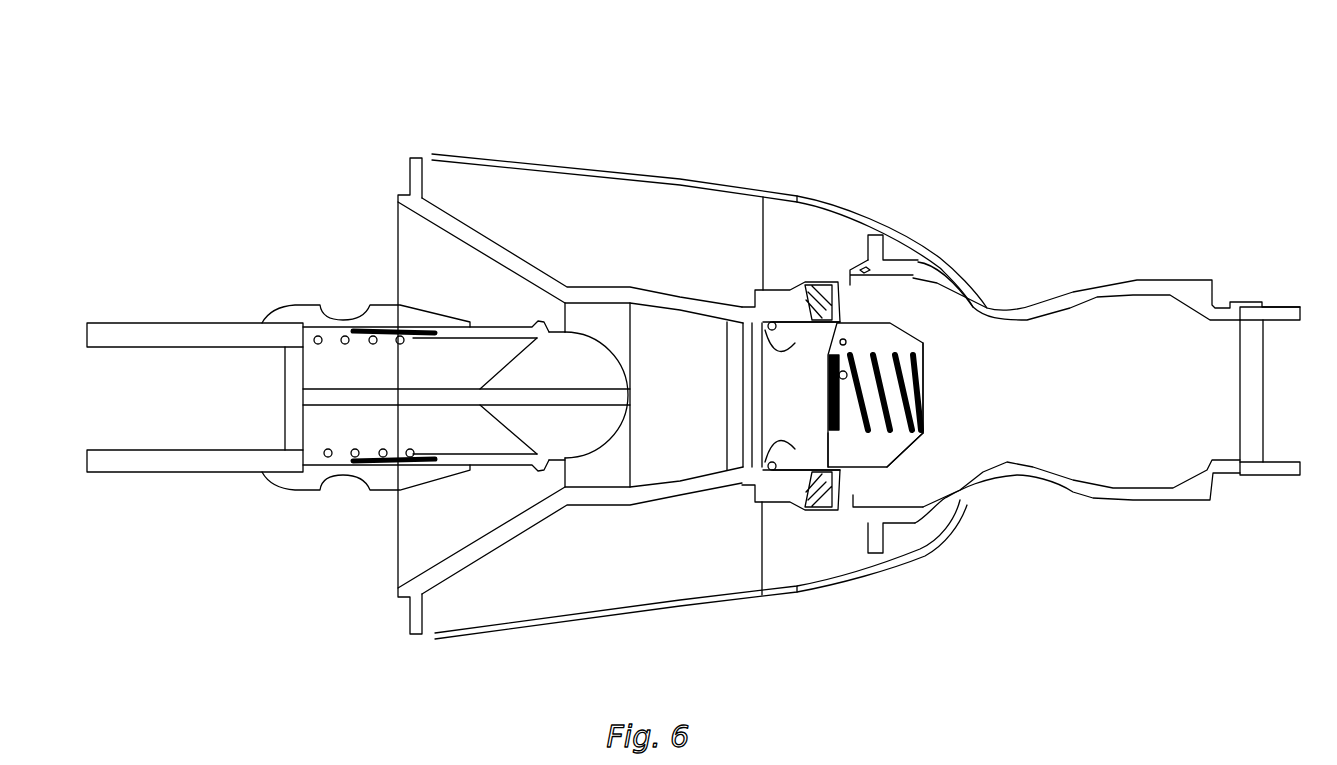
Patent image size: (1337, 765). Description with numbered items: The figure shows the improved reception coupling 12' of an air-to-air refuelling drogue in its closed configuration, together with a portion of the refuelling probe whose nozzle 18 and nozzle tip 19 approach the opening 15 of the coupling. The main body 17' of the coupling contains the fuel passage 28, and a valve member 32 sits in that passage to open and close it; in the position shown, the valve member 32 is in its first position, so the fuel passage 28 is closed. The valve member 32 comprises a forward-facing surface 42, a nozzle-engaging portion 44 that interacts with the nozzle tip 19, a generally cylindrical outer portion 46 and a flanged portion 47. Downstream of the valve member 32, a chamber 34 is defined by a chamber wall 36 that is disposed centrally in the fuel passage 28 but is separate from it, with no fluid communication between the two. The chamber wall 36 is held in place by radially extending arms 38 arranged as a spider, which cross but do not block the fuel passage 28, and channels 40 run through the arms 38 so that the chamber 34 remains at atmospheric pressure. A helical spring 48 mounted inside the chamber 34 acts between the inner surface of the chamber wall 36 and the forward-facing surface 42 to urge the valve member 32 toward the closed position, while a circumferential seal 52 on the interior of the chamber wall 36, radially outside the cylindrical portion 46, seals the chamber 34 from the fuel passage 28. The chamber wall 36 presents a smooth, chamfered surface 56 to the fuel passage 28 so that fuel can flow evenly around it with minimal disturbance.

The reception coupling 12' is at (921, 311).
The opening 15 is at (399, 582).
The main body 17' is at (1106, 357).
The nozzle 18 is at (281, 519).
The nozzle tip 19 is at (580, 448).
The fuel passage 28 is at (1176, 388).
The valve member 32 is at (823, 450).
The chamber 34 is at (897, 440).
The chamber wall 36 is at (913, 333).
The radially extending arms 38 is at (815, 300).
The channels 40 is at (818, 295).
The forward-facing surface 42 is at (762, 330).
The nozzle-engaging portion 44 is at (760, 325).
The generally cylindrical outer portion 46 is at (833, 450).
The flanged portion 47 is at (783, 330).
The helical spring 48 is at (920, 377).
The circumferential seal 52 is at (820, 285).
The surface 56 is at (930, 363).